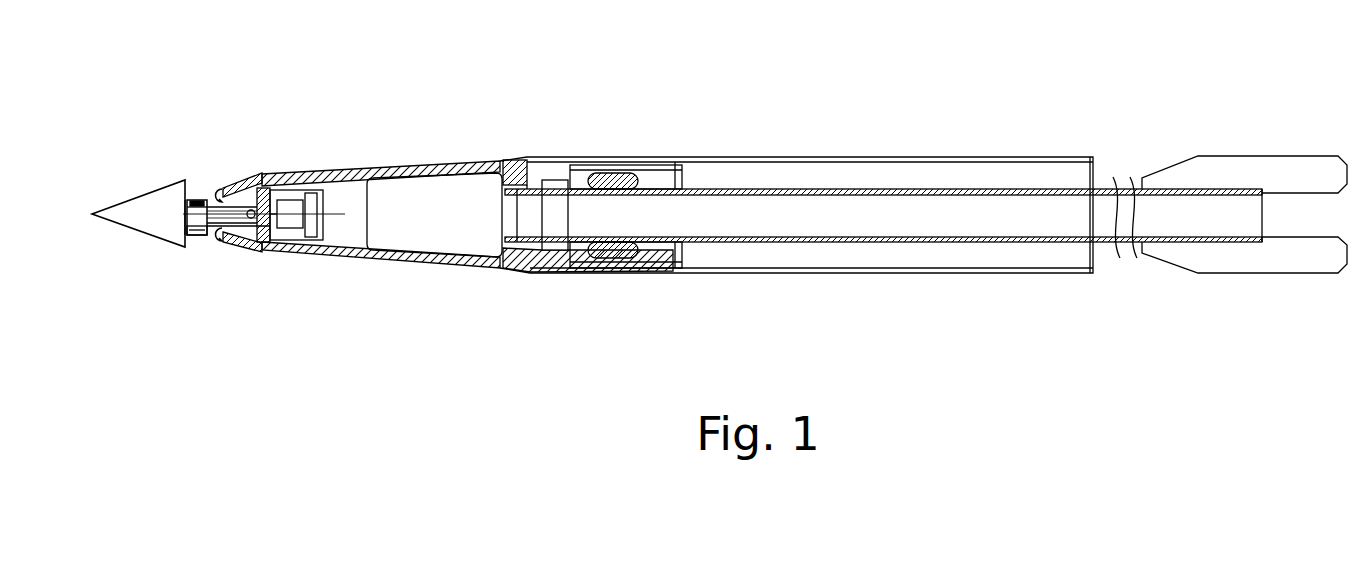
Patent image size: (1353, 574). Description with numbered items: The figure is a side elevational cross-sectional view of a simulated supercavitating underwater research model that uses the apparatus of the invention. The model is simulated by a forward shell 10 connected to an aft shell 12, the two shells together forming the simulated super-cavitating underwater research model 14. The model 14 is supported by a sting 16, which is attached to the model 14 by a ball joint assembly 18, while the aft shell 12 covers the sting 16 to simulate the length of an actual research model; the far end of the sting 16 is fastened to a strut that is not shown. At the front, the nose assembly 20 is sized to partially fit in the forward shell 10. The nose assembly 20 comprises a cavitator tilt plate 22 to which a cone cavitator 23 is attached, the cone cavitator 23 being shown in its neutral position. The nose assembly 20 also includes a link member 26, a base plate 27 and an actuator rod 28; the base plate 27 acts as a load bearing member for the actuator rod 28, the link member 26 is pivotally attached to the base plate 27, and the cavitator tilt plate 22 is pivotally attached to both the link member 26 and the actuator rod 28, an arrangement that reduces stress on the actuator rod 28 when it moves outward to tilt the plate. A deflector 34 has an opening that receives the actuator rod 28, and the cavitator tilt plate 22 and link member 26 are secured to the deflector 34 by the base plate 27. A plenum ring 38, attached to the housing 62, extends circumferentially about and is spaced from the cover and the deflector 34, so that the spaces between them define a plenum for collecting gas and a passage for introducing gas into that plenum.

The forward shell 10 is at (403, 172).
The aft shell 12 is at (873, 157).
The simulated super-cavitating underwater research model 14 is at (1345, 300).
The sting 16 is at (725, 190).
The ball joint assembly 18 is at (615, 173).
The nose assembly 20 is at (185, 273).
The cavitator tilt plate 22 is at (193, 197).
The cone cavitator 23 is at (125, 200).
The link member 26 is at (218, 188).
The base plate 27 is at (217, 230).
The actuator rod 28 is at (193, 237).
The deflector 34 is at (220, 186).
The plenum ring 38 is at (232, 248).
The housing 62 is at (295, 175).